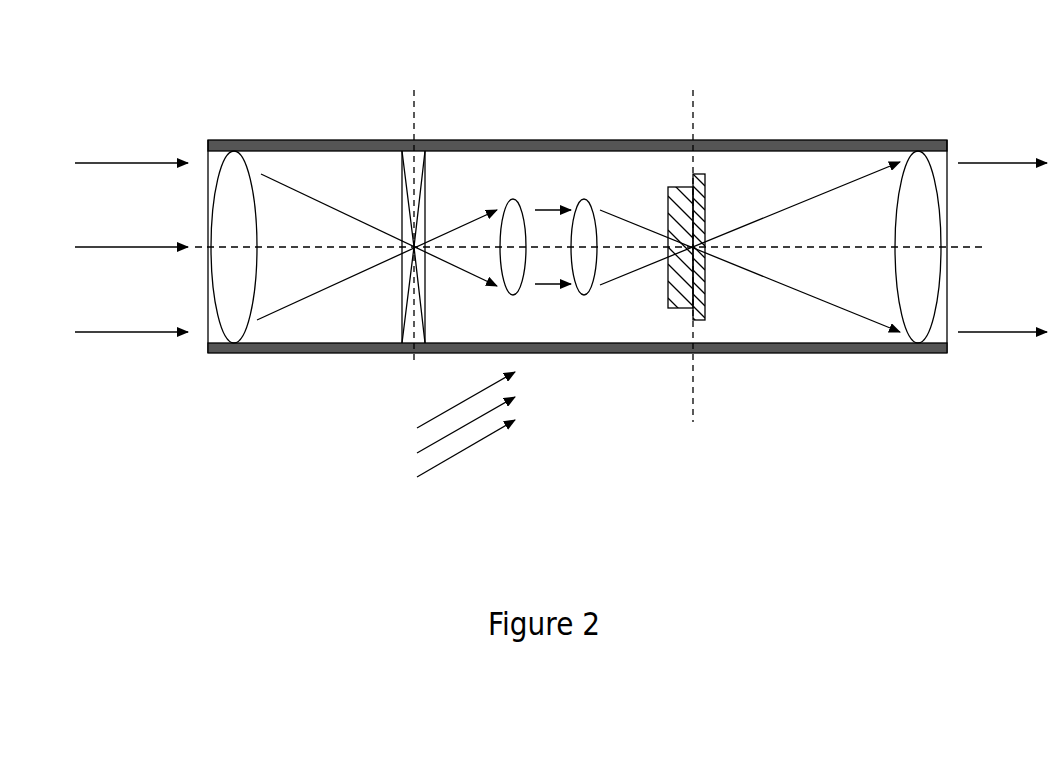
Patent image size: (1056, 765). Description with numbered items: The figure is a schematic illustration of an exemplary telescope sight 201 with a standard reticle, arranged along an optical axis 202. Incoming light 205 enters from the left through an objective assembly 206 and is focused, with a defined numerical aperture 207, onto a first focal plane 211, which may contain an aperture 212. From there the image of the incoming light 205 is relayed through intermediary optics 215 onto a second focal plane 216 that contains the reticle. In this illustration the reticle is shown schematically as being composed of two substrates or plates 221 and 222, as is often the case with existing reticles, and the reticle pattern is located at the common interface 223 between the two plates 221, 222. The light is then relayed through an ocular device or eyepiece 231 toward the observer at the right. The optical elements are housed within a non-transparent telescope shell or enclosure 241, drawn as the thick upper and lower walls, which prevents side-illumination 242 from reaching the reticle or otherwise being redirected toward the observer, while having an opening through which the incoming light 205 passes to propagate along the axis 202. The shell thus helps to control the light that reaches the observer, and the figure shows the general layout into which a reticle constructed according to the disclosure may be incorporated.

The telescope sight 201 is at (245, 115).
The optical axis 202 is at (967, 243).
The incoming light 205 is at (100, 333).
The objective assembly 206 is at (230, 343).
The numerical aperture 207 is at (290, 192).
The first focal plane 211 is at (415, 115).
The aperture 212 is at (400, 183).
The intermediary optics 215 is at (558, 177).
The second focal plane 216 is at (690, 125).
The first plate 221 is at (667, 280).
The second plate 222 is at (707, 295).
The common interface 223 is at (695, 209).
The eyepiece 231 is at (898, 298).
The telescope shell 241 is at (540, 347).
The side-illumination 242 is at (440, 485).